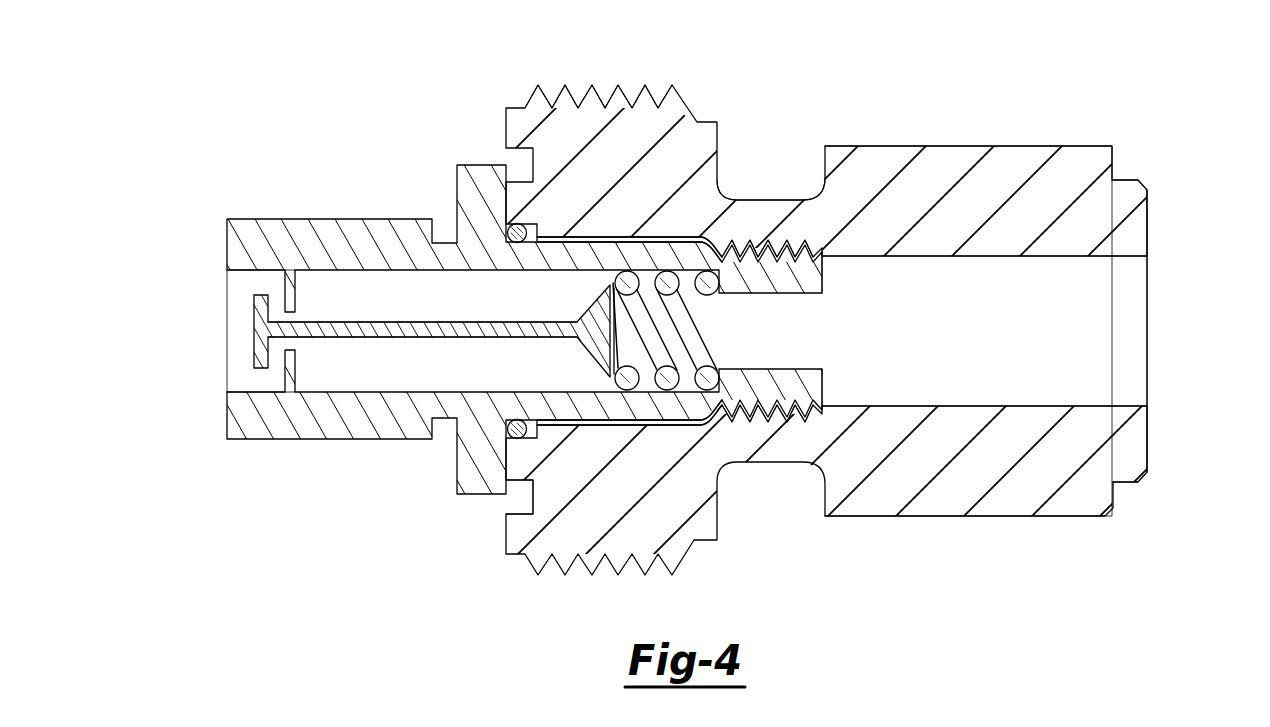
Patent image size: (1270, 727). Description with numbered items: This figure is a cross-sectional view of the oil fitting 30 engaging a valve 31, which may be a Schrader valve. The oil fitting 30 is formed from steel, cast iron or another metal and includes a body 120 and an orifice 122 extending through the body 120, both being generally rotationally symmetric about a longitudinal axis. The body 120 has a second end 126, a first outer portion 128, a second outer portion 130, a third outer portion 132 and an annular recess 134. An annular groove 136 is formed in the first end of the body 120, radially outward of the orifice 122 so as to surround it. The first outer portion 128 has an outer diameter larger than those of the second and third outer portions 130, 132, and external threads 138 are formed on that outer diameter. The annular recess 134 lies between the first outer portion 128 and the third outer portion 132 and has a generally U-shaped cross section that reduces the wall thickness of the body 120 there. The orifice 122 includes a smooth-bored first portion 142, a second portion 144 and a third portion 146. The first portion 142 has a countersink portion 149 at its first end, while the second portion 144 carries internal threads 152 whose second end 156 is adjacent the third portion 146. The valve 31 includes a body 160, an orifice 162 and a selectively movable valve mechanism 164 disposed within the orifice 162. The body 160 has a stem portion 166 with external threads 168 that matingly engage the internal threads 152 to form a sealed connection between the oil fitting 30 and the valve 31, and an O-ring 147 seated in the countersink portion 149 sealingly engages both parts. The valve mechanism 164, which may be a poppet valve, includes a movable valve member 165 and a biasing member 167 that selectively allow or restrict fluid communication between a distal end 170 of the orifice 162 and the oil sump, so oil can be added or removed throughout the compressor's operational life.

The oil fitting 30 is at (1042, 105).
The valve 31 is at (279, 197).
The body 120 is at (505, 135).
The orifice 122 is at (1147, 393).
The second end 126 is at (1148, 222).
The first outer portion 128 is at (587, 86).
The second outer portion 130 is at (1128, 180).
The third outer portion 132 is at (965, 146).
The annular recess 134 is at (757, 198).
The annular groove 136 is at (506, 496).
The external threads 138 is at (620, 90).
The first portion 142 is at (598, 422).
The second portion 144 is at (775, 420).
The third portion 146 is at (1092, 404).
The O-ring 147 is at (521, 418).
The countersink portion 149 is at (513, 425).
The internal threads 152 is at (772, 244).
The second end 156 is at (822, 258).
The body 160 is at (294, 439).
The orifice 162 is at (242, 289).
The valve mechanism 164 is at (384, 321).
The movable valve member 165 is at (420, 320).
The stem portion 166 is at (655, 238).
The biasing member 167 is at (612, 279).
The external threads 168 is at (822, 392).
The distal end 170 is at (241, 392).